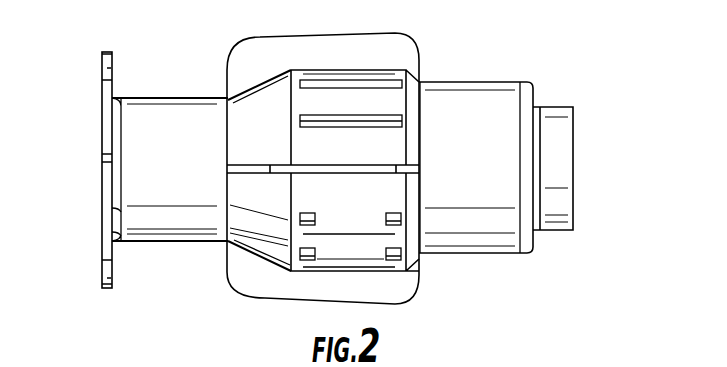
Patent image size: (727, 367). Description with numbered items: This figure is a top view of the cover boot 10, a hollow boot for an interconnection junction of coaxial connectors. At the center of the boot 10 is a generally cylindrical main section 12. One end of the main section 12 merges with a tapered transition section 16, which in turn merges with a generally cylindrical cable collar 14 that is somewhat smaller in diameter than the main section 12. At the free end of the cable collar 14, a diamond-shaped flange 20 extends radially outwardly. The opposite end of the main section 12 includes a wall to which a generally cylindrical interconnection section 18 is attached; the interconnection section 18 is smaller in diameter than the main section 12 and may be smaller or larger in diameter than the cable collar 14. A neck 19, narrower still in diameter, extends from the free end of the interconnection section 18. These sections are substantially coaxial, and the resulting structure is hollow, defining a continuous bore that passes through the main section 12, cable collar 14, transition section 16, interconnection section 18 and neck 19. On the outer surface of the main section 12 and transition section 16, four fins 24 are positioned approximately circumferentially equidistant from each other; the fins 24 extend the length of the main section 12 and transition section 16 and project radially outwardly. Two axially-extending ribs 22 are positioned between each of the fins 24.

The cover boot 10 is at (643, 101).
The main section 12 is at (395, 240).
The cable collar 14 is at (168, 113).
The tapered transition section 16 is at (261, 113).
The interconnection section 18 is at (505, 105).
The neck 19 is at (563, 140).
The diamond-shaped flange 20 is at (107, 62).
The axially-extending ribs 22 is at (397, 85).
The fins 24 is at (405, 50).